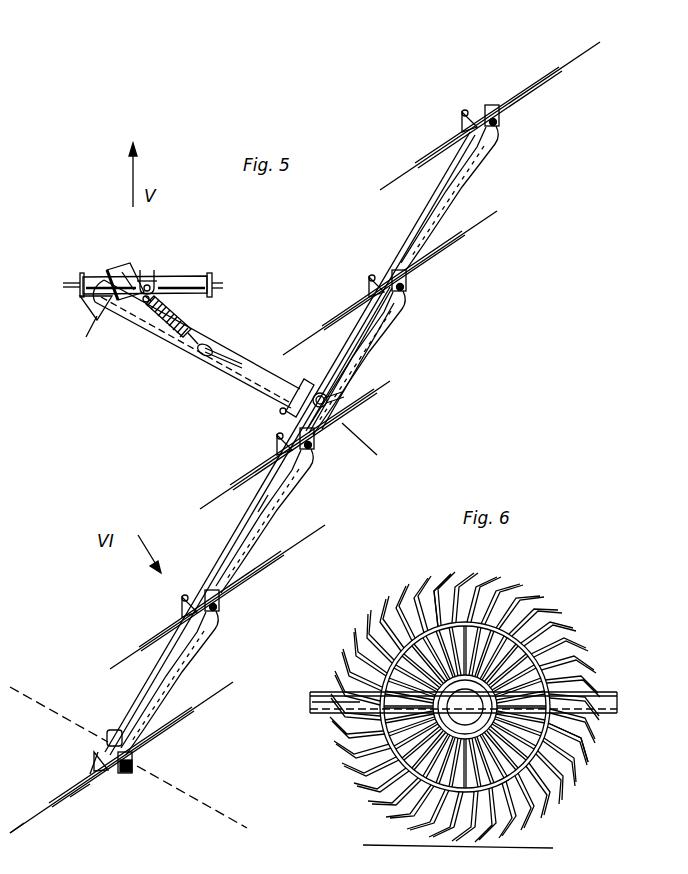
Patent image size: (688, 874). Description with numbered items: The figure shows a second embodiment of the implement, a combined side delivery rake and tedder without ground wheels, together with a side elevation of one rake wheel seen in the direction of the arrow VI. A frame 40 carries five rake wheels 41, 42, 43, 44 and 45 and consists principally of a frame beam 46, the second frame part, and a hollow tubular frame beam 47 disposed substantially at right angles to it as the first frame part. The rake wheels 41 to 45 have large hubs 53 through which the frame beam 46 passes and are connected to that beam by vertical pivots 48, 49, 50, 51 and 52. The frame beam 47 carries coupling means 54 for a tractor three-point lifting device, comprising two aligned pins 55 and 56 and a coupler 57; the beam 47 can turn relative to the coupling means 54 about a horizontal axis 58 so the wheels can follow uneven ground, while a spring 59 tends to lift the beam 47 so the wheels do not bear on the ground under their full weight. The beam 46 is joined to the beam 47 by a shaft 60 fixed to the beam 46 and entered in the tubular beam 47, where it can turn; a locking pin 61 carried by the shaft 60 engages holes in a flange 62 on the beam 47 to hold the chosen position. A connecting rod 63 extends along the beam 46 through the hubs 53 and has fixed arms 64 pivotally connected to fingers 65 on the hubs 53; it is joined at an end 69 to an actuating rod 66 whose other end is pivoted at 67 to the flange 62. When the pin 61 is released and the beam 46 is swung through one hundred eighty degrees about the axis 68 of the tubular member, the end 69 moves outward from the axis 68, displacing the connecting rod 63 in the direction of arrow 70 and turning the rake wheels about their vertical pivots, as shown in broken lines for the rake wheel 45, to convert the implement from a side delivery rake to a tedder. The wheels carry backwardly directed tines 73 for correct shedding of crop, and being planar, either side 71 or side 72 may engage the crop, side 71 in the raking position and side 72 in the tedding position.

In FIG. 5, the frame 40 is at (203, 364).
In FIG. 5, the rake wheel 41 is at (548, 74).
In FIG. 5, the rake wheel 42 is at (463, 232).
In FIG. 5, the rake wheel 43 is at (374, 397).
In FIG. 5, the rake wheel 44 is at (285, 553).
In FIG. 6, the rake wheel 44 is at (523, 815).
In FIG. 5, the rake wheel 45 is at (213, 694).
In FIG. 6, the frame beam 46 is at (322, 715).
In FIG. 5, the frame beam 47 is at (248, 371).
In FIG. 5, the vertical pivot 48 is at (505, 125).
In FIG. 5, the vertical pivot 49 is at (412, 289).
In FIG. 5, the vertical pivot 50 is at (316, 450).
In FIG. 5, the vertical pivot 51 is at (226, 607).
In FIG. 6, the vertical pivot 51 is at (530, 596).
In FIG. 5, the vertical pivot 52 is at (129, 773).
In FIG. 5, the hub 53 is at (498, 105).
In FIG. 6, the hub 53 is at (410, 588).
In FIG. 5, the coupling means 54 is at (78, 303).
In FIG. 5, the pin 55 is at (73, 281).
In FIG. 5, the pin 56 is at (222, 285).
In FIG. 5, the coupler 57 is at (150, 272).
In FIG. 5, the horizontal axis 58 is at (128, 265).
In FIG. 5, the spring 59 is at (182, 319).
In FIG. 5, the shaft 60 is at (325, 388).
In FIG. 5, the locking pin 61 is at (335, 395).
In FIG. 5, the flange 62 is at (300, 395).
In FIG. 5, the connecting rod 63 is at (258, 512).
In FIG. 6, the connecting rod 63 is at (334, 690).
In FIG. 5, the fixed arm 64 is at (380, 277).
In FIG. 5, the finger 65 is at (370, 285).
In FIG. 5, the actuating rod 66 is at (341, 361).
In FIG. 5, the pivot 67 is at (279, 412).
In FIG. 5, the axis 68 is at (369, 446).
In FIG. 5, the end 69 is at (361, 336).
In FIG. 5, the arrow 70 is at (426, 198).
In FIG. 5, the side 71 is at (73, 788).
In FIG. 5, the side 72 is at (95, 724).
In FIG. 5, the tine 73 is at (24, 825).
In FIG. 6, the tine 73 is at (594, 757).